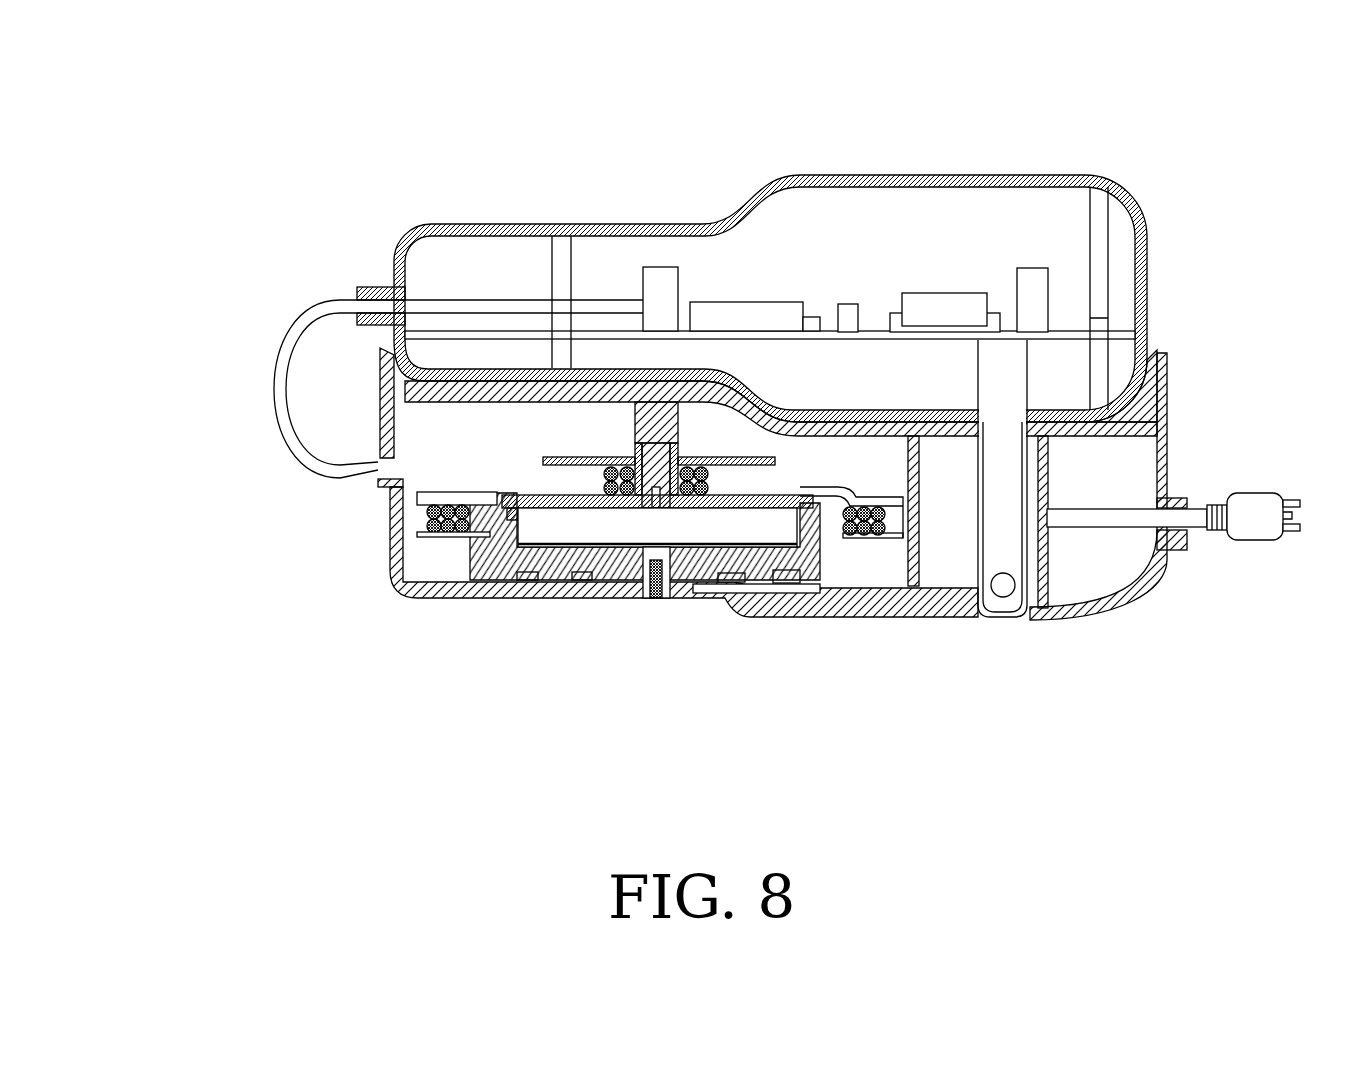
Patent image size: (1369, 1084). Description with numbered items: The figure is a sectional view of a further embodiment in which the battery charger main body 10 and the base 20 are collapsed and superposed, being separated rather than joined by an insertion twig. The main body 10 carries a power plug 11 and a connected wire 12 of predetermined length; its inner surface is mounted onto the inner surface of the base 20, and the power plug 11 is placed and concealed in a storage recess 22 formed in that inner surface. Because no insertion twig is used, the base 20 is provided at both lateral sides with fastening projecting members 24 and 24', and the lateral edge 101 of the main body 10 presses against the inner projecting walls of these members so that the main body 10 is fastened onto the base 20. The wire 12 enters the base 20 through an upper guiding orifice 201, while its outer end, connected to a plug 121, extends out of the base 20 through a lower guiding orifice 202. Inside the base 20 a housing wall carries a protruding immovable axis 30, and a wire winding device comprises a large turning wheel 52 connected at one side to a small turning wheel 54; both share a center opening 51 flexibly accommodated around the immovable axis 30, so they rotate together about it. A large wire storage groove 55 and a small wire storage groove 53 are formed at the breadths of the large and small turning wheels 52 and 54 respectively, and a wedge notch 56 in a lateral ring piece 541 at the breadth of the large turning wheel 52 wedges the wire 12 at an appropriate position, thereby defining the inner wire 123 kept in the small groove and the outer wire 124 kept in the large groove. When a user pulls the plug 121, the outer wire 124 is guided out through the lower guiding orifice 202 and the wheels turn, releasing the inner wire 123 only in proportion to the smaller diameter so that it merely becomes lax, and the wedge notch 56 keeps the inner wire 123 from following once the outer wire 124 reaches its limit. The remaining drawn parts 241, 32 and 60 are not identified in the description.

The battery charger main body 10 is at (797, 178).
The lateral edge 101 is at (391, 292).
The power plug 11 is at (1005, 455).
The connected wire 12 is at (330, 297).
The plug 121 is at (1250, 518).
The inner wire 123 is at (505, 463).
The outer wire 124 is at (417, 518).
The base 20 is at (292, 565).
The upper guiding orifice 201 is at (440, 478).
The lower guiding orifice 202 is at (1185, 540).
The storage recess 22 is at (1030, 553).
The fastening projecting member 24 is at (1192, 463).
The fastening projecting member 24' is at (295, 389).
The wall top end 241 is at (380, 358).
The immovable axis 30 is at (662, 452).
The screw 32 is at (648, 572).
The center opening 51 is at (620, 530).
The large turning wheel 52 is at (495, 528).
The small wire storage groove 53 is at (880, 538).
The small turning wheel 54 is at (666, 500).
The large wire storage groove 55 is at (425, 520).
The lateral ring piece 541 is at (418, 498).
The wedge notch 56 is at (877, 502).
The rotor magnet 60 is at (588, 510).